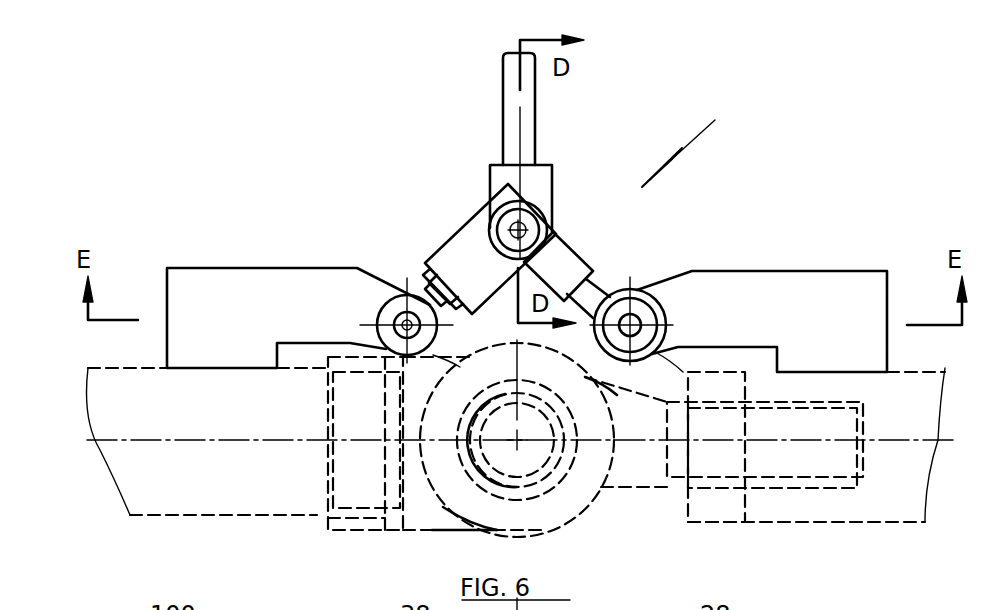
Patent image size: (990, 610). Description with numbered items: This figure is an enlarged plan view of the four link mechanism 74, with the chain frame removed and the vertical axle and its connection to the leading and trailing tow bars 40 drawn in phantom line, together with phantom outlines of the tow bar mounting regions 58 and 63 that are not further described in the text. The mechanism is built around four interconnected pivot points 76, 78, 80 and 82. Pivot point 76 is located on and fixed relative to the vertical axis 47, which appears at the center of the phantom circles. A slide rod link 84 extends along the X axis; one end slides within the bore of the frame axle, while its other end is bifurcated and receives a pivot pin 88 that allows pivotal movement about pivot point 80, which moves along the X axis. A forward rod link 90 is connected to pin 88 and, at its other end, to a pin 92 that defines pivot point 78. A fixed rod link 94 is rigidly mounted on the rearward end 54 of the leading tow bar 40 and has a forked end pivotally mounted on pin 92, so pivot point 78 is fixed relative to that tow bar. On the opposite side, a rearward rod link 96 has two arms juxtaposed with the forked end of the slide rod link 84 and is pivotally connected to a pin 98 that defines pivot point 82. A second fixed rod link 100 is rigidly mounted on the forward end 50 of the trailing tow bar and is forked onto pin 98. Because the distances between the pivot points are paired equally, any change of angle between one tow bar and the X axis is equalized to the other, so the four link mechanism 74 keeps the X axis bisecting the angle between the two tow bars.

The tow bar 40 is at (185, 518).
The vertical axis 47 is at (537, 472).
The forward end of the trailing tow bar 50 is at (295, 518).
The rearward end of the leading tow bar 54 is at (757, 523).
The left mounting block 58 is at (385, 533).
The cylindrical chamber 63 is at (563, 522).
The four link mechanism 74 is at (691, 141).
The pivot point 76 is at (522, 445).
The pivot point 78 is at (630, 325).
The pivot point 80 is at (475, 265).
The pivot point 82 is at (405, 323).
The slide rod link 84 is at (537, 127).
The pivot pin 88 is at (545, 243).
The forward rod link 90 is at (593, 263).
The pin 92 is at (630, 317).
The fixed rod link 94 is at (792, 270).
The rearward rod link 96 is at (447, 245).
The pin 98 is at (400, 318).
The second fixed rod link 100 is at (287, 268).